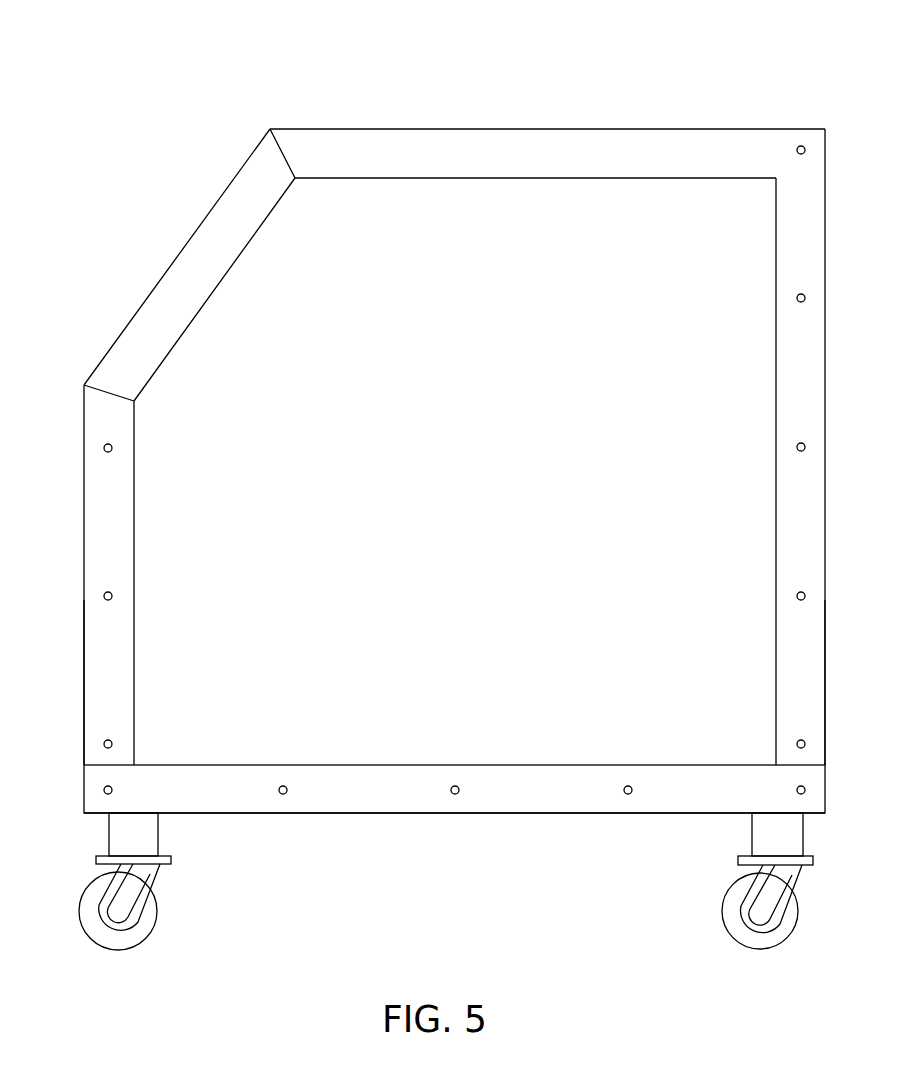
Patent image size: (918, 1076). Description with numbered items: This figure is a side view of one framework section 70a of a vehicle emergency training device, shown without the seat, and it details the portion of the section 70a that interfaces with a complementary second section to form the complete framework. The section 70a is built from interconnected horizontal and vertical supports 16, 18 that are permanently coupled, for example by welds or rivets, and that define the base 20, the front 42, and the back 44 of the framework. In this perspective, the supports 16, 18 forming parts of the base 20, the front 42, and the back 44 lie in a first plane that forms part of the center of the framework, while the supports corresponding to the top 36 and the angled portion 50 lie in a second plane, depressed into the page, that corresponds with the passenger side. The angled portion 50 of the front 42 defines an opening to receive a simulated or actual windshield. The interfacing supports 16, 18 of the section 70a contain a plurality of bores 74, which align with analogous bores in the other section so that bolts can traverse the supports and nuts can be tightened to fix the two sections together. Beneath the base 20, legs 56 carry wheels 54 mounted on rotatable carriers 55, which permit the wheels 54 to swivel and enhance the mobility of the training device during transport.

The framework section 70a is at (824, 50).
The top 36 is at (687, 128).
The angled portion 50 is at (180, 267).
The front 42 is at (84, 619).
The back 44 is at (826, 482).
The vertical support 18 is at (95, 675).
The bore 74 is at (806, 298).
The base 20 is at (226, 765).
The horizontal support 16 is at (694, 801).
The leg 56 is at (790, 826).
The rotatable carrier 55 is at (790, 880).
The wheel 54 is at (793, 912).